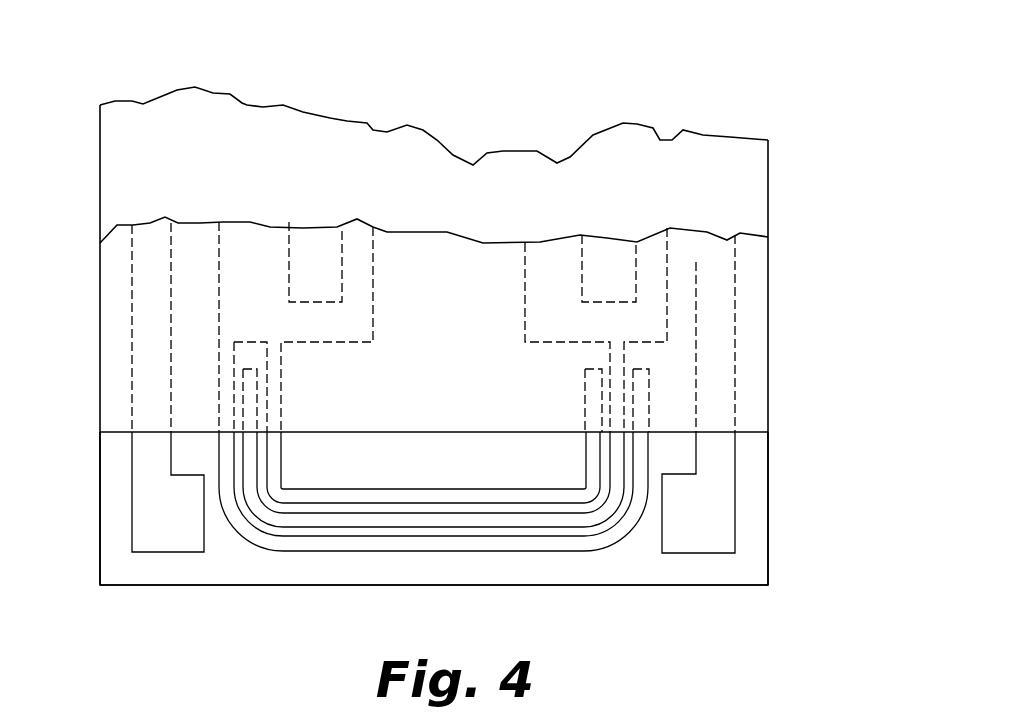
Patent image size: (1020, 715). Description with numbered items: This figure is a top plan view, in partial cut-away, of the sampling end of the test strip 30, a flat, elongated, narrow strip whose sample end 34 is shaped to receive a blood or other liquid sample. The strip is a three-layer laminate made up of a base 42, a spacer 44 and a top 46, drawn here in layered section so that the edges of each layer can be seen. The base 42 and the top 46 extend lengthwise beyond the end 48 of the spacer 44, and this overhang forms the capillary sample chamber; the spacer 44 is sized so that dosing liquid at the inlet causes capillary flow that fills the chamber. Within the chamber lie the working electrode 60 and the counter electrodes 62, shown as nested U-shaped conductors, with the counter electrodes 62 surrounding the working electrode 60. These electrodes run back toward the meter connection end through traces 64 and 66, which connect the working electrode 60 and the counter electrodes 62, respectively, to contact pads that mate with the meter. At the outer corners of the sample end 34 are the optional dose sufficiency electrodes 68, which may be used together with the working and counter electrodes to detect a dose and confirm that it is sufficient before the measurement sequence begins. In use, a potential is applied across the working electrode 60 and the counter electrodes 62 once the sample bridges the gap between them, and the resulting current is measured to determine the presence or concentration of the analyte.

The test strip 30 is at (622, 92).
The sample end 34 is at (121, 605).
The base 42 is at (643, 576).
The spacer 44 is at (753, 310).
The top 46 is at (756, 177).
The end of spacer 48 is at (153, 433).
The working electrode 60 is at (459, 528).
The counter electrodes 62 is at (388, 488).
The trace 64 is at (545, 272).
The trace 66 is at (247, 252).
The dose sufficiency electrodes 68 is at (160, 505).